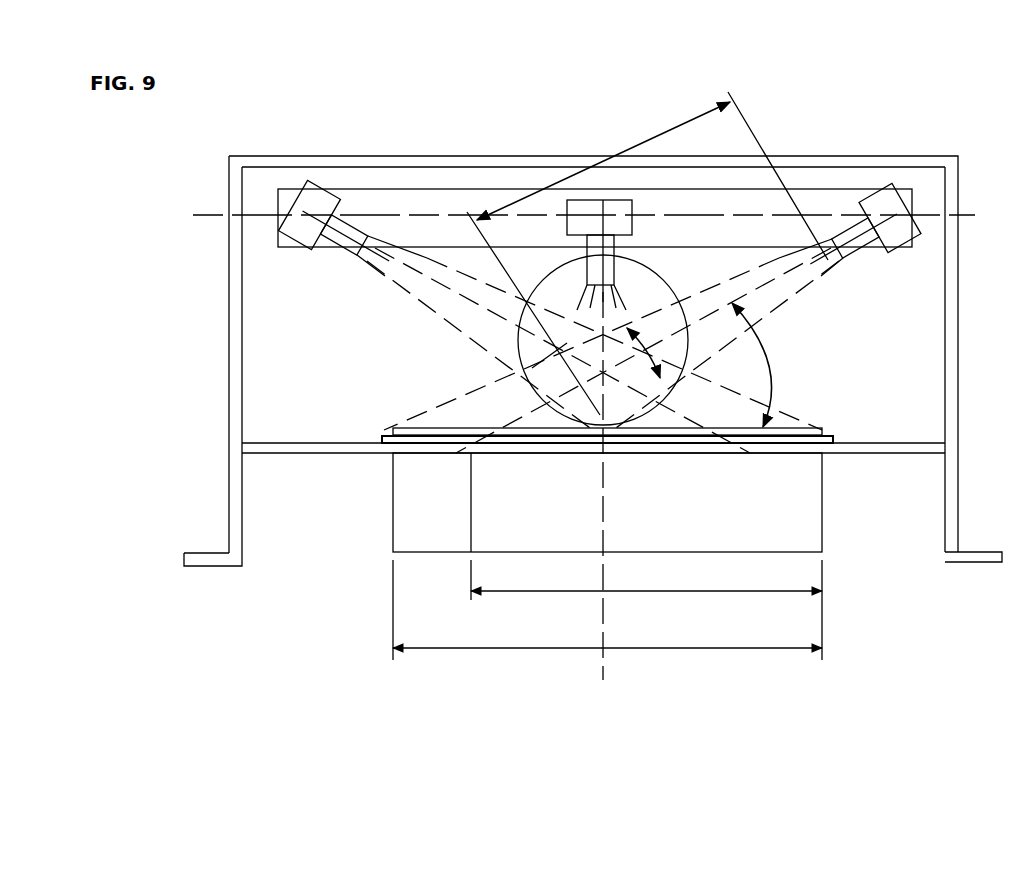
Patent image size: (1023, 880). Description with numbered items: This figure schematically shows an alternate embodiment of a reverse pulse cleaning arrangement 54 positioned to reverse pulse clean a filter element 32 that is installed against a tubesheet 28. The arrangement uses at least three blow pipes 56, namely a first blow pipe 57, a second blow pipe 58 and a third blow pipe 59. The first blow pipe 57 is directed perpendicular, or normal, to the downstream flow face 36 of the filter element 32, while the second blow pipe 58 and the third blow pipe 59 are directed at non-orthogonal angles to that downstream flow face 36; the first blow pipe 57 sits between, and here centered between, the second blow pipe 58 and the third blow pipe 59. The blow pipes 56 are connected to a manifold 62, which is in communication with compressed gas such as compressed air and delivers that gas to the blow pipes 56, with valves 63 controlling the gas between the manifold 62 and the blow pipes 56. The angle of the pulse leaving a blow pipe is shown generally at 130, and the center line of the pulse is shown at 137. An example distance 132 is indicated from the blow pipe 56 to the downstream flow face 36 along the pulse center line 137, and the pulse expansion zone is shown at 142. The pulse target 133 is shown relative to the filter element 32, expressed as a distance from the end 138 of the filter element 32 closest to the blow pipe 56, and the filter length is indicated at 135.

The reverse pulse cleaning arrangement 54 is at (907, 135).
The tubesheet 28 is at (862, 443).
The filter element 32 is at (373, 487).
The downstream flow face 36 is at (785, 428).
The blow pipes 56 is at (327, 243).
The first blow pipe 57 is at (617, 252).
The second blow pipe 58 is at (347, 253).
The third blow pipe 59 is at (857, 250).
The manifold 62 is at (822, 203).
The valves 63 is at (313, 200).
The angle of the pulse 130 is at (753, 350).
The distance 132 is at (623, 152).
The pulse target 133 is at (638, 597).
The filter length 135 is at (515, 648).
The pulse center line 137 is at (468, 303).
The end of the filter element 138 is at (822, 490).
The pulse expansion zone 142 is at (647, 357).